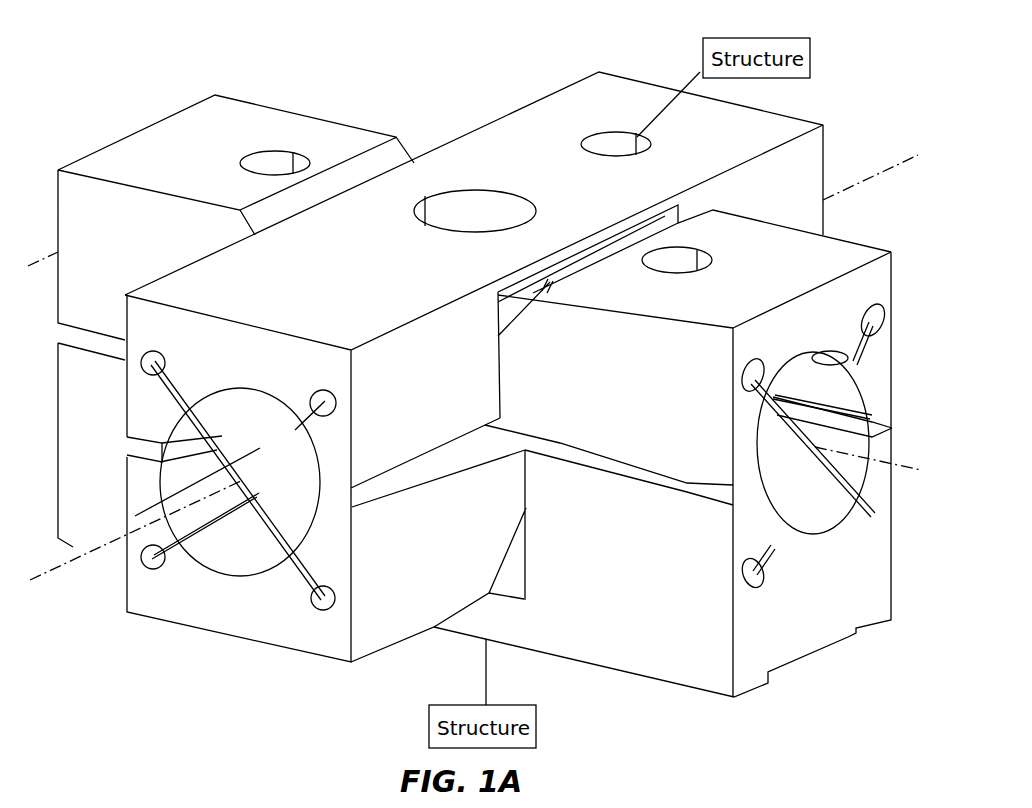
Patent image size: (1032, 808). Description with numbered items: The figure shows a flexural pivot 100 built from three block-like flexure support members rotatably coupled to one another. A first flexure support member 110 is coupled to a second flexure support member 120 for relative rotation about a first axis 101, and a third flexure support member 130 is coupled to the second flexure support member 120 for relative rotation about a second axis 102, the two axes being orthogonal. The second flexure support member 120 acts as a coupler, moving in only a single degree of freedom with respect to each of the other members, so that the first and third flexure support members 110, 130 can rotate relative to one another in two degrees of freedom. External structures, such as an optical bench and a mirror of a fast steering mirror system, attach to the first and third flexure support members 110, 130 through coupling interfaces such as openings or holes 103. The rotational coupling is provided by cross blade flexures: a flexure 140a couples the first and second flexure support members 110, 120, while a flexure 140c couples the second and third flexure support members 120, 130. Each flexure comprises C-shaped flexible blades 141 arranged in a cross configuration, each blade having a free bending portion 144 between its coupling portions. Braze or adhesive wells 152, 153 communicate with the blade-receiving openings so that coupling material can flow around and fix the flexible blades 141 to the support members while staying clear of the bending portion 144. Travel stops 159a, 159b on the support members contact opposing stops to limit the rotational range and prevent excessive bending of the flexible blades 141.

The flexural pivot 100 is at (392, 40).
The first axis 101 is at (906, 468).
The second axis 102 is at (881, 175).
The openings or holes 103 is at (614, 140).
The first flexure support member 110 is at (564, 684).
The second flexure support member 120 is at (297, 100).
The third flexure support member 130 is at (532, 88).
The flexure 140a is at (818, 515).
The flexure 140c is at (237, 542).
The flexible blades 141 is at (180, 500).
The bending portion 144 is at (175, 437).
The wells 152 is at (140, 345).
The wells 153 is at (313, 385).
The travel stops 159a is at (143, 425).
The travel stops 159b is at (142, 468).